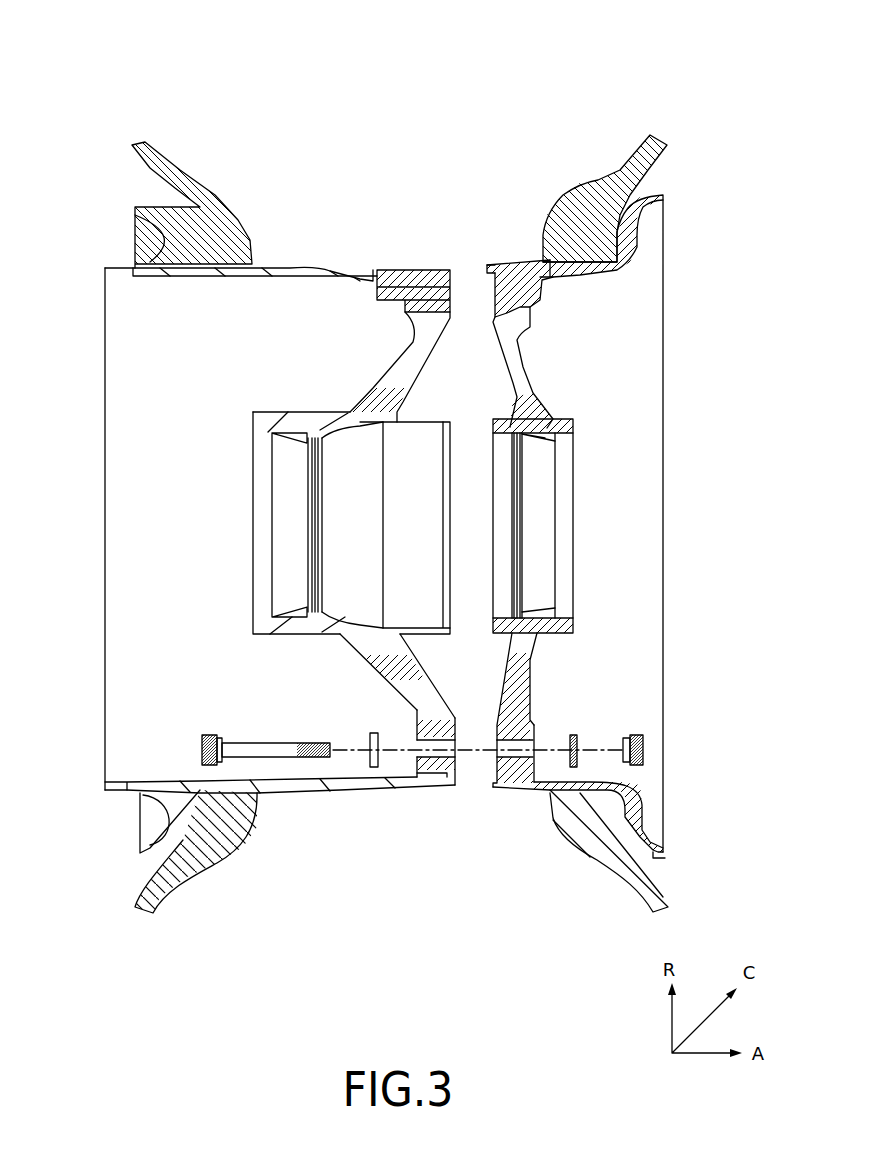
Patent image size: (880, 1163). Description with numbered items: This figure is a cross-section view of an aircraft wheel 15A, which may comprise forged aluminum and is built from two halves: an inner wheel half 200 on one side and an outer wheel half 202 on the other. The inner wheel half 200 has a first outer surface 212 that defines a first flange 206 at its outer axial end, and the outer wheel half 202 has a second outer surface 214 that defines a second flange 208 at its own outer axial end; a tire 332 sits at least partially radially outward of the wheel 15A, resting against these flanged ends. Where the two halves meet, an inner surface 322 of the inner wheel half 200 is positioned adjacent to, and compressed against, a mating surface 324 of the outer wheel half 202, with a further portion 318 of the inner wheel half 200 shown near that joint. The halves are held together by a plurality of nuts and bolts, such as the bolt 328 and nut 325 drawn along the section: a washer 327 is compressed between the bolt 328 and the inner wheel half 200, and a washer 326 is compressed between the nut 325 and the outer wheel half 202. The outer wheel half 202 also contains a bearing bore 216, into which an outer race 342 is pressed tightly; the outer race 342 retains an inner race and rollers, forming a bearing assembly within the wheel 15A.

The wheel 15A is at (700, 100).
The inner wheel half 200 is at (290, 268).
The outer wheel half 202 is at (527, 260).
The first flange 206 is at (150, 848).
The second flange 208 is at (660, 858).
The first outer surface 212 is at (300, 792).
The second outer surface 214 is at (543, 790).
The bearing bore 216 is at (537, 440).
The mounting flange 318 is at (377, 288).
The inner surface 322 is at (452, 314).
The mating surface 324 is at (493, 316).
The nut 325 is at (633, 738).
The washer 326 is at (578, 735).
The washer 327 is at (372, 735).
The bolt 328 is at (265, 742).
The tire 332 is at (218, 197).
The outer race 342 is at (528, 445).